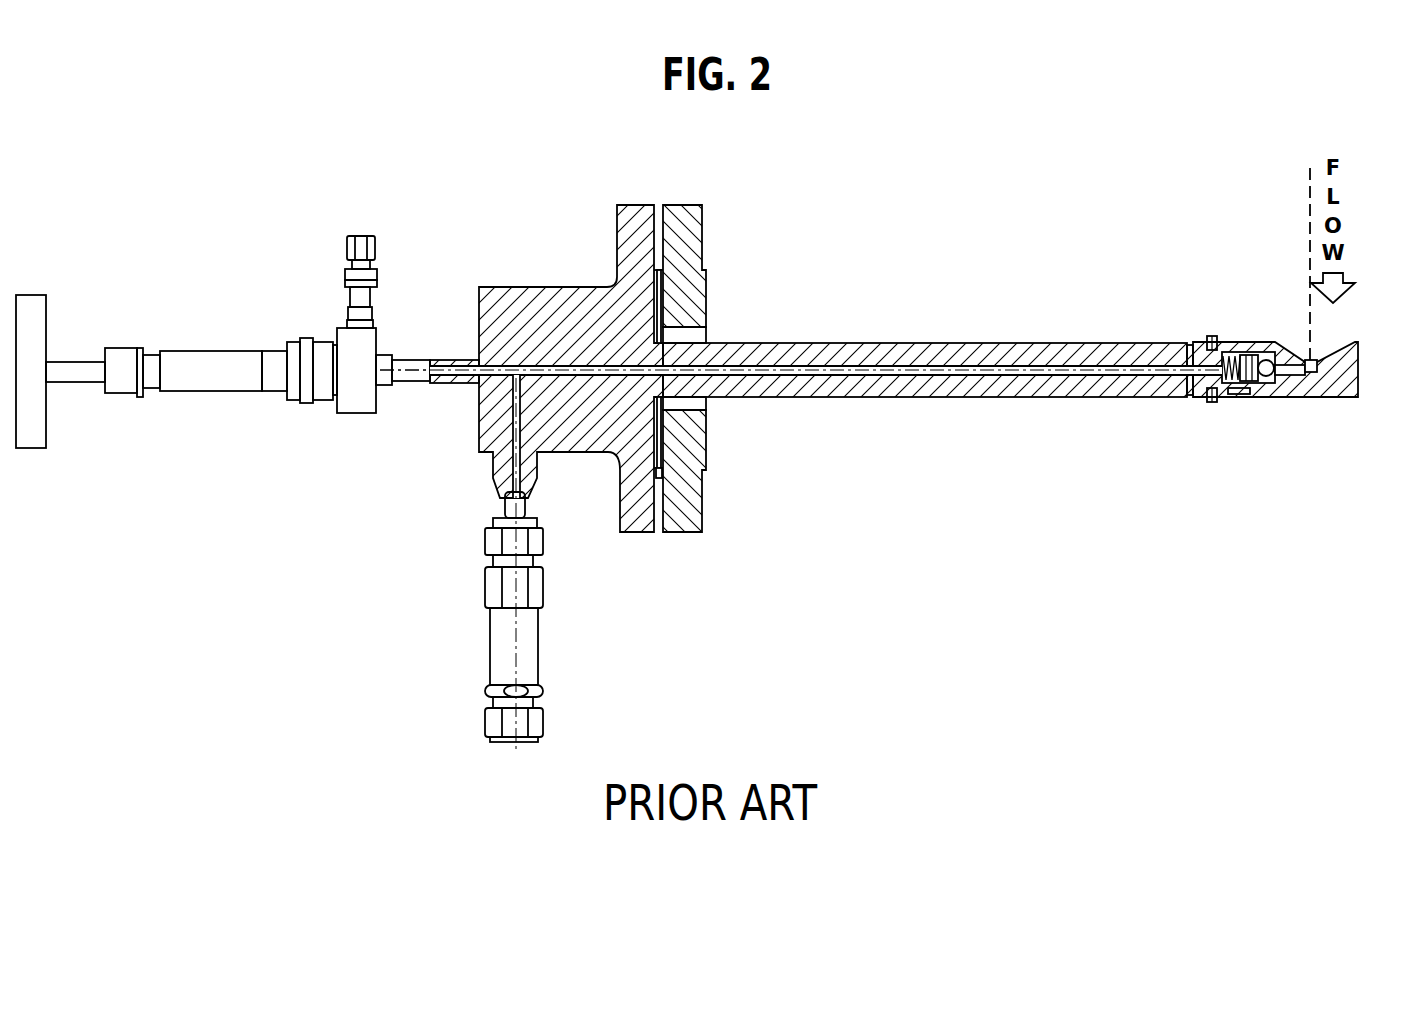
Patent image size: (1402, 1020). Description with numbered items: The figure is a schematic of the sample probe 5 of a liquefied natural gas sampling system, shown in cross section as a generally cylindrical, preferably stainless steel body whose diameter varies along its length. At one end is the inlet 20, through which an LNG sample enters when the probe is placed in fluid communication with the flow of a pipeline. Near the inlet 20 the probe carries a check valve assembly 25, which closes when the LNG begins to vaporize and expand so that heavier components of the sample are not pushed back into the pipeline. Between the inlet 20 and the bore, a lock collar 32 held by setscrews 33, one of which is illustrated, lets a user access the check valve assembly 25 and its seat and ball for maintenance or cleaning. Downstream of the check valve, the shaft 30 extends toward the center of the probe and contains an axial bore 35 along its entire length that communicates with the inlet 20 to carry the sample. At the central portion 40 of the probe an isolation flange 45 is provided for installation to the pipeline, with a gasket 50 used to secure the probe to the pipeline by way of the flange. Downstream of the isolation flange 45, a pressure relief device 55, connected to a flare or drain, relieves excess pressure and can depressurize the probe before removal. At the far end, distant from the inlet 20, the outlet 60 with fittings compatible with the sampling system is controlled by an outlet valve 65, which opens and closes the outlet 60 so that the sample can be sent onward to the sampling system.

The sample probe 5 is at (243, 170).
The inlet 20 is at (1361, 351).
The check valve assembly 25 is at (1240, 398).
The shaft 30 is at (1012, 337).
The lock collar 32 is at (1210, 404).
The setscrews 33 is at (1213, 334).
The axial bore 35 is at (1083, 365).
The central portion 40 is at (666, 540).
The isolation flange 45 is at (710, 302).
The gasket 50 is at (657, 483).
The pressure relief device 55 is at (486, 660).
The outlet 60 is at (359, 232).
The outlet valve 65 is at (58, 328).